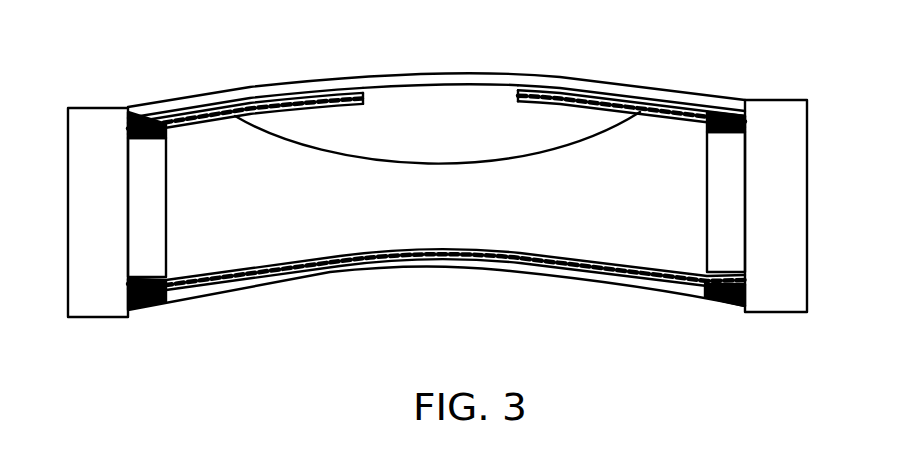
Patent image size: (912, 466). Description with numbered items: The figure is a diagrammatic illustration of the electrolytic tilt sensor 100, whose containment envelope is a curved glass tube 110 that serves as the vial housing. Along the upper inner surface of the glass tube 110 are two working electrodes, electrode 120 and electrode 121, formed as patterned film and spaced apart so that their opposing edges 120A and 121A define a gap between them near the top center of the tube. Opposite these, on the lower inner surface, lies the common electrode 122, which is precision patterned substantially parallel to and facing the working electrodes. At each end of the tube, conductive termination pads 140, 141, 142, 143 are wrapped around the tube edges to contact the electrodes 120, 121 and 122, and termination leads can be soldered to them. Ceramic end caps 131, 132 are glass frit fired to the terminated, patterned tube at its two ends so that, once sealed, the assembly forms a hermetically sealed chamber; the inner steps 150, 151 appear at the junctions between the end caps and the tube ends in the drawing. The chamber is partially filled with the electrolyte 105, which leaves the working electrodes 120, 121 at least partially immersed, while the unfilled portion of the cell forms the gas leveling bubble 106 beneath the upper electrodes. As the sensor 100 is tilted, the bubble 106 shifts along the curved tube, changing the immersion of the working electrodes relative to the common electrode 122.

The electrolytic tilt sensor 100 is at (234, 363).
The electrolyte 105 is at (333, 210).
The gas leveling bubble 106 is at (459, 116).
The curved glass tube 110 is at (393, 78).
The electrode 120 is at (310, 100).
The opposing edge 120A is at (372, 62).
The electrode 121 is at (546, 99).
The opposing edge 121A is at (516, 90).
The common electrode 122 is at (610, 202).
The ceramic end cap 131 is at (93, 107).
The ceramic end cap 132 is at (781, 115).
The conductive termination pad 140 is at (167, 96).
The conductive termination pad 141 is at (735, 68).
The conductive termination pad 142 is at (155, 311).
The conductive termination pad 143 is at (714, 305).
The left support ledge 150 is at (130, 276).
The right support ledge 151 is at (738, 268).